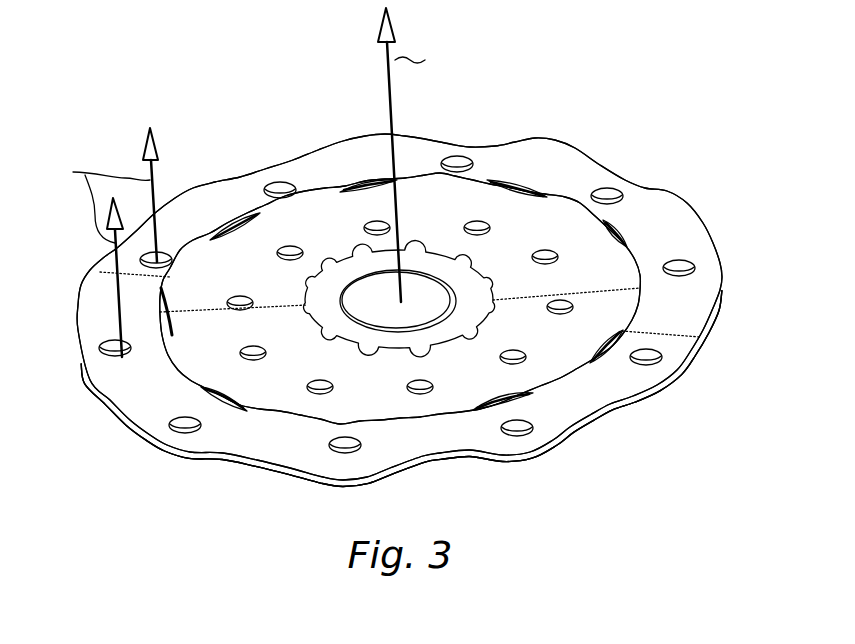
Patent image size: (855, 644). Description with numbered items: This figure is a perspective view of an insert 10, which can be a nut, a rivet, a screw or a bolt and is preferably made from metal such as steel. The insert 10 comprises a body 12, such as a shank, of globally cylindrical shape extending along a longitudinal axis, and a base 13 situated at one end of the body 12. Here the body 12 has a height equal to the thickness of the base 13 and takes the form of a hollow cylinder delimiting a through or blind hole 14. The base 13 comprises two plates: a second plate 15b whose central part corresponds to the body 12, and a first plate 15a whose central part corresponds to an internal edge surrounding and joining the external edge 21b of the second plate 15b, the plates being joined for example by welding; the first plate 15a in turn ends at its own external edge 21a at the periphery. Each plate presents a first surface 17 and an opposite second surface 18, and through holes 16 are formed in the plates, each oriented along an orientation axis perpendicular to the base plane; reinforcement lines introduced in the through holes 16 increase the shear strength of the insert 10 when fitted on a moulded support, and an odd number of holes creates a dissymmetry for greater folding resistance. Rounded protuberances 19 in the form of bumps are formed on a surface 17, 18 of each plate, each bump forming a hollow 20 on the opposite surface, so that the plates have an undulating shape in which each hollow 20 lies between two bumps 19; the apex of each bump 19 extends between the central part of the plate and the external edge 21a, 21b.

The insert 10 is at (606, 72).
The body 12 is at (432, 267).
The base 13 is at (616, 420).
The through or blind hole 14 is at (430, 308).
The first plate 15a is at (455, 433).
The second plate 15b is at (272, 377).
The through hole 16 is at (542, 257).
The first surface 17 is at (660, 178).
The second surface 18 is at (570, 456).
The protuberance 19 is at (354, 152).
The hollow 20 is at (255, 165).
The external edge 21a is at (133, 420).
The external edge 21b is at (368, 421).